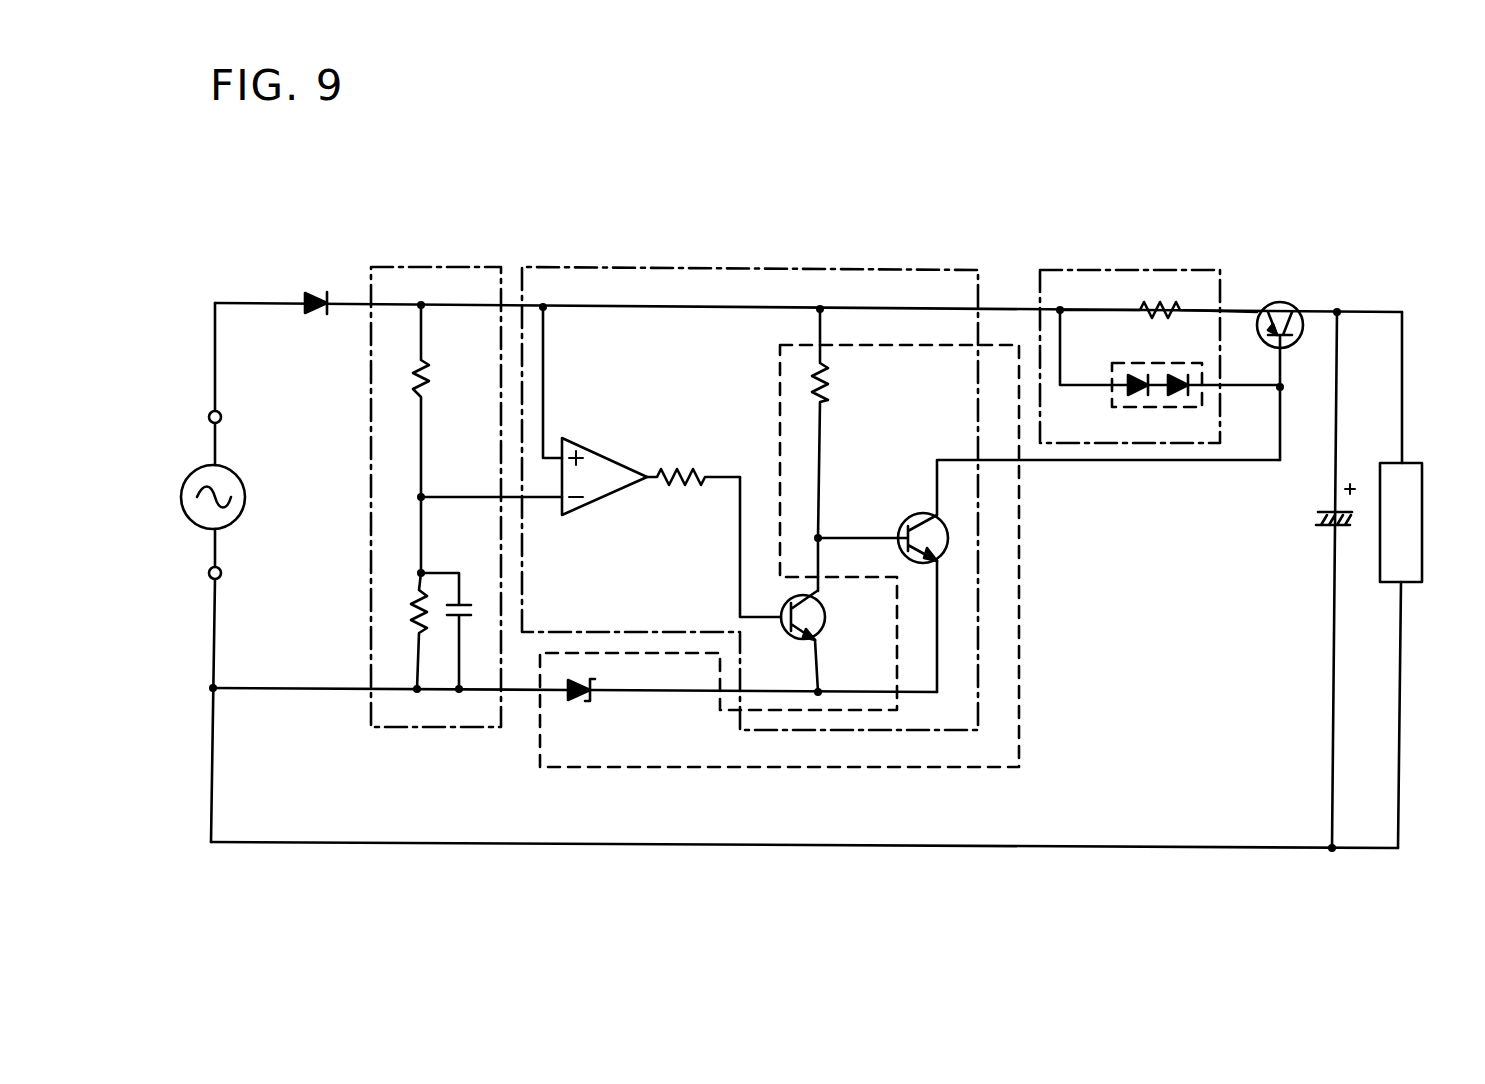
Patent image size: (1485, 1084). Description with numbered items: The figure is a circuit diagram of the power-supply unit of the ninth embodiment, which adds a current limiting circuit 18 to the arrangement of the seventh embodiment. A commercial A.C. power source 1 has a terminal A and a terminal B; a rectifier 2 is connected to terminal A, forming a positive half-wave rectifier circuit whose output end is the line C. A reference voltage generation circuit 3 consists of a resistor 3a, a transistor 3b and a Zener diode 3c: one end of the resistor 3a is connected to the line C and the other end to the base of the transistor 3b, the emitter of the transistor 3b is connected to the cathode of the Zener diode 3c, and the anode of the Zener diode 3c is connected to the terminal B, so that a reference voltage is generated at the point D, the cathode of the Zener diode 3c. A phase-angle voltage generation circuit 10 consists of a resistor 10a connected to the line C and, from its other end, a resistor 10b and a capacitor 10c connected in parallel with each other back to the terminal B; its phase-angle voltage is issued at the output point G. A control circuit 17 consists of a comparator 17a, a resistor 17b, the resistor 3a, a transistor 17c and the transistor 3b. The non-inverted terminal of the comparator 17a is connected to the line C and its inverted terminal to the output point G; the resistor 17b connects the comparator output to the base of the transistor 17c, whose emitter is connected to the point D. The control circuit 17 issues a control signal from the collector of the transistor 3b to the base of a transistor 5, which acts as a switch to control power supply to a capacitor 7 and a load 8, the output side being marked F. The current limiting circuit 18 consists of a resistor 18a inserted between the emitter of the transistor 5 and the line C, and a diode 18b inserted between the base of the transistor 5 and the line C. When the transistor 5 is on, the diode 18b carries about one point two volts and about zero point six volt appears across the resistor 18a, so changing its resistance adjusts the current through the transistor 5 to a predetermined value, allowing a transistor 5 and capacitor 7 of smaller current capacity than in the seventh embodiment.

The commercial A.C. power source 1 is at (185, 500).
The rectifier 2 is at (312, 298).
The first reference-voltage generation circuit 3 is at (1021, 640).
The resistor 3a is at (830, 385).
The transistor 3b is at (910, 520).
The Zener diode 3c is at (597, 699).
The transistor 5 is at (1282, 302).
The capacitor 7 is at (1322, 510).
The load 8 is at (1405, 583).
The second phase-angle voltage generation circuit 10 is at (453, 267).
The resistor 10a is at (428, 383).
The resistor 10b is at (410, 618).
The capacitor 10c is at (463, 600).
The control circuit 17 is at (822, 268).
The comparator 17a is at (600, 440).
The resistor 17b is at (690, 470).
The transistor 17c is at (827, 628).
The current limiting circuit 18 is at (1123, 268).
The resistor 18a is at (1150, 318).
The diode 18b is at (1150, 408).
The terminal A is at (209, 410).
The terminal B is at (211, 578).
The line C is at (1013, 306).
The point D is at (625, 688).
The output terminal F is at (1340, 308).
The output point G is at (426, 495).